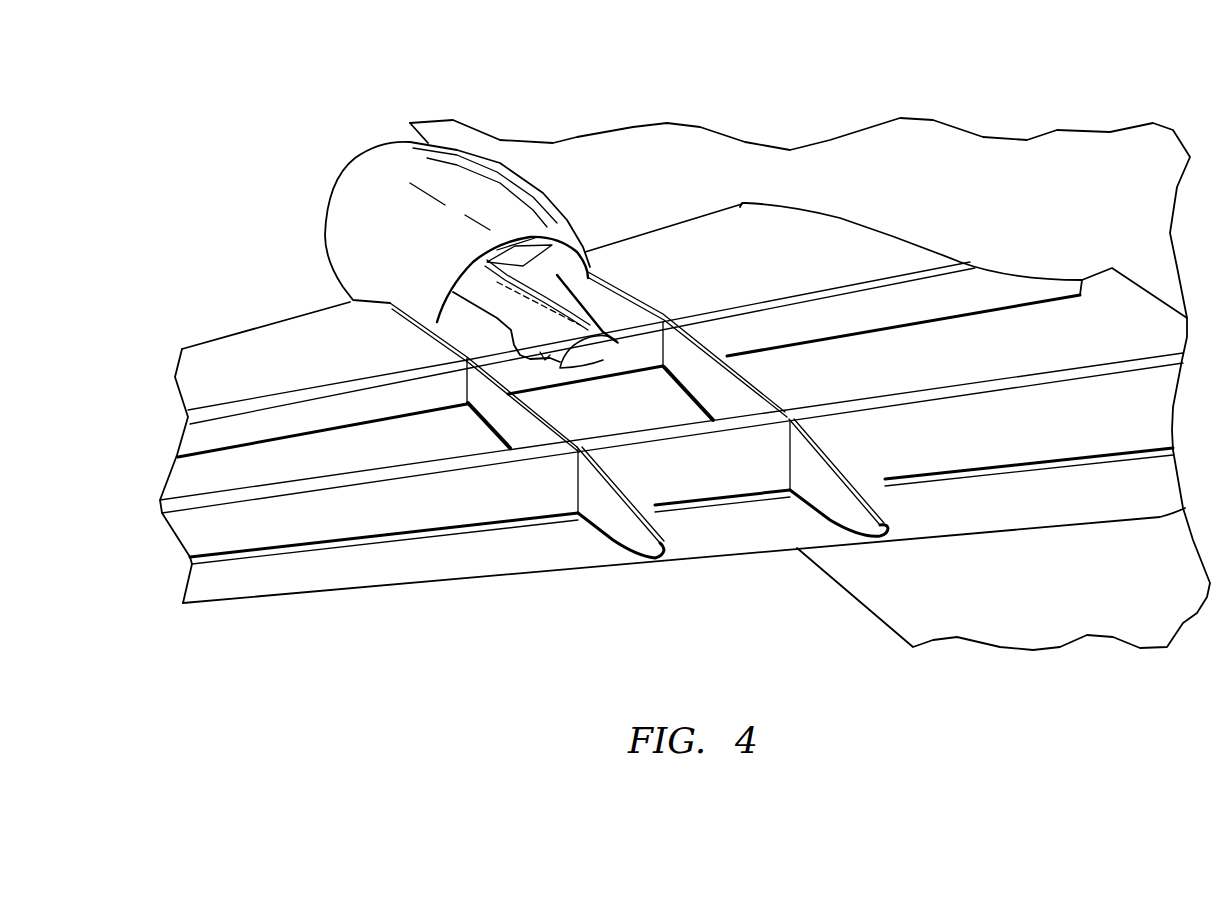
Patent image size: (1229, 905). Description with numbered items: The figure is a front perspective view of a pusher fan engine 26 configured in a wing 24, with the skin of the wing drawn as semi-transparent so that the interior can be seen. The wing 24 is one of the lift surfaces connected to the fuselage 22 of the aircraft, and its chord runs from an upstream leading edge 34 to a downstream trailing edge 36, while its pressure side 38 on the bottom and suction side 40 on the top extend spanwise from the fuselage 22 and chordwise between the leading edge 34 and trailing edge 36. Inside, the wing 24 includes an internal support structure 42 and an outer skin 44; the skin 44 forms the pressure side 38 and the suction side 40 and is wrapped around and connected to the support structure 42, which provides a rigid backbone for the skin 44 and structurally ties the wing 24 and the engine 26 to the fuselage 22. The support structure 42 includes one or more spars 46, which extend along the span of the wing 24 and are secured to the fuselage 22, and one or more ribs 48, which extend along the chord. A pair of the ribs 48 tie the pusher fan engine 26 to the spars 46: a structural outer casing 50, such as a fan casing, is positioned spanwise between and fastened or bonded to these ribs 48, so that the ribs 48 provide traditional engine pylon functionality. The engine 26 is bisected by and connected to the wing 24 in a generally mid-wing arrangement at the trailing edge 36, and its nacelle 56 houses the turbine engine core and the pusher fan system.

The fuselage 22 is at (1031, 150).
The wing 24 is at (643, 446).
The pusher fan engine 26 is at (425, 223).
The leading edge 34 is at (262, 600).
The trailing edge 36 is at (207, 340).
The pressure side 38 is at (197, 606).
The suction side 40 is at (203, 583).
The internal support structure 42 is at (537, 503).
The outer skin 44 is at (193, 390).
The spar 46 is at (193, 437).
The rib 48 is at (632, 540).
The structural outer casing 50 is at (350, 298).
The nacelle 56 is at (382, 157).